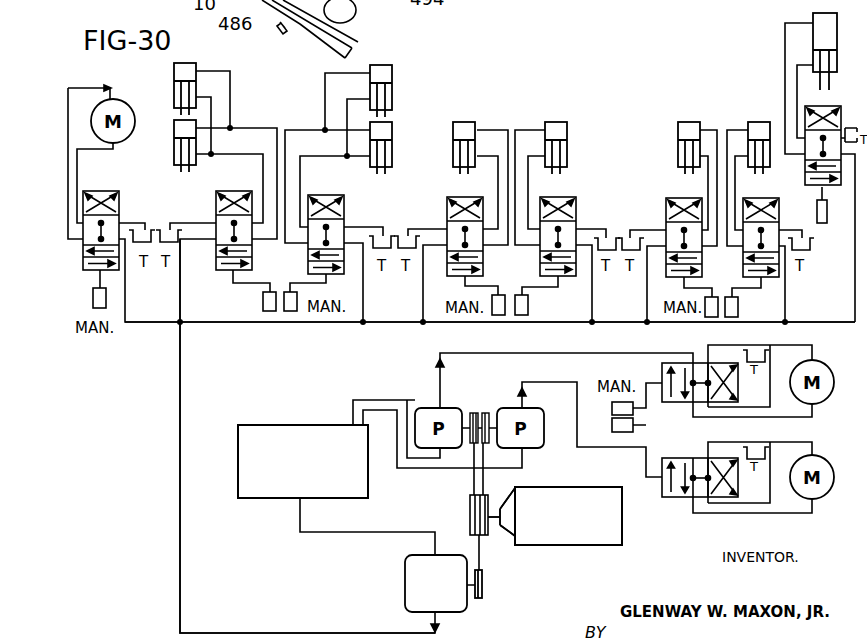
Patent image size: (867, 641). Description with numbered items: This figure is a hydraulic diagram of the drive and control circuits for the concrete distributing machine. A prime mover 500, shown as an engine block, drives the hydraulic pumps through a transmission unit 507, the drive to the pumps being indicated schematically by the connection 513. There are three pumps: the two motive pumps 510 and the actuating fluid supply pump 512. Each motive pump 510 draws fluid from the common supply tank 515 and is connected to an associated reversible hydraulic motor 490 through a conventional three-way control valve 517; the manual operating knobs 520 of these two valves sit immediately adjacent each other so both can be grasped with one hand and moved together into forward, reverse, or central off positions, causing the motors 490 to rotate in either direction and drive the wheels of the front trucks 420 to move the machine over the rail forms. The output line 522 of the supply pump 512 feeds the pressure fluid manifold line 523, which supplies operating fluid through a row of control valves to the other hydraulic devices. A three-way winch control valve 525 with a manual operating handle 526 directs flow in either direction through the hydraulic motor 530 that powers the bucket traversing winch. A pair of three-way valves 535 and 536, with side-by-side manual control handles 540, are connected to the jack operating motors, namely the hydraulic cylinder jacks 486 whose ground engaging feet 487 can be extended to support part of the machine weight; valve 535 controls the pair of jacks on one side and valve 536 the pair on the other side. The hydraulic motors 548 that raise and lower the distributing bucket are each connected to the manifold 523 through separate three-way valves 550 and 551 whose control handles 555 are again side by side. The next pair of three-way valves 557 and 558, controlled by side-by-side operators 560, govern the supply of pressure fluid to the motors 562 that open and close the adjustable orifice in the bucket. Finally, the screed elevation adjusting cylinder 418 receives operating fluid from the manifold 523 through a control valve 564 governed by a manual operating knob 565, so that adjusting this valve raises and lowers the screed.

The hydraulic cylinder 418 is at (813, 14).
The front truck 420 is at (358, 22).
The hydraulic cylinder jack 486 is at (172, 127).
The ground engaging foot 487 is at (280, 36).
The reversible hydraulic motor 490 is at (820, 404).
The prime mover 500 is at (570, 533).
The transmission unit 507 is at (507, 535).
The motive pump 510 is at (505, 412).
The actuating fluid supply pump 512 is at (405, 580).
The pump drive connection 513 is at (464, 508).
The common supply tank 515 is at (262, 430).
The three-way control valve 517 is at (702, 363).
The manual operating knob 520 is at (613, 416).
The output line 522 is at (177, 487).
The pressure fluid manifold line 523 is at (218, 323).
The three-way winch control valve 525 is at (118, 200).
The manual operating handle 526 is at (104, 304).
The hydraulic motor 530 is at (117, 135).
The three-way hydraulic valve 535 is at (233, 191).
The three-way hydraulic valve 536 is at (330, 195).
The manual control handle 540 is at (271, 311).
The hydraulic motor 548 is at (457, 123).
The three-way hydraulic control valve 550 is at (447, 210).
The three-way hydraulic control valve 551 is at (583, 201).
The control handle 555 is at (498, 315).
The three-way hydraulic valve 557 is at (665, 203).
The three-way hydraulic valve 558 is at (761, 200).
The operator 560 is at (738, 306).
The hydraulic motor 562 is at (760, 122).
The control valve 564 is at (850, 100).
The manual operating knob 565 is at (822, 223).